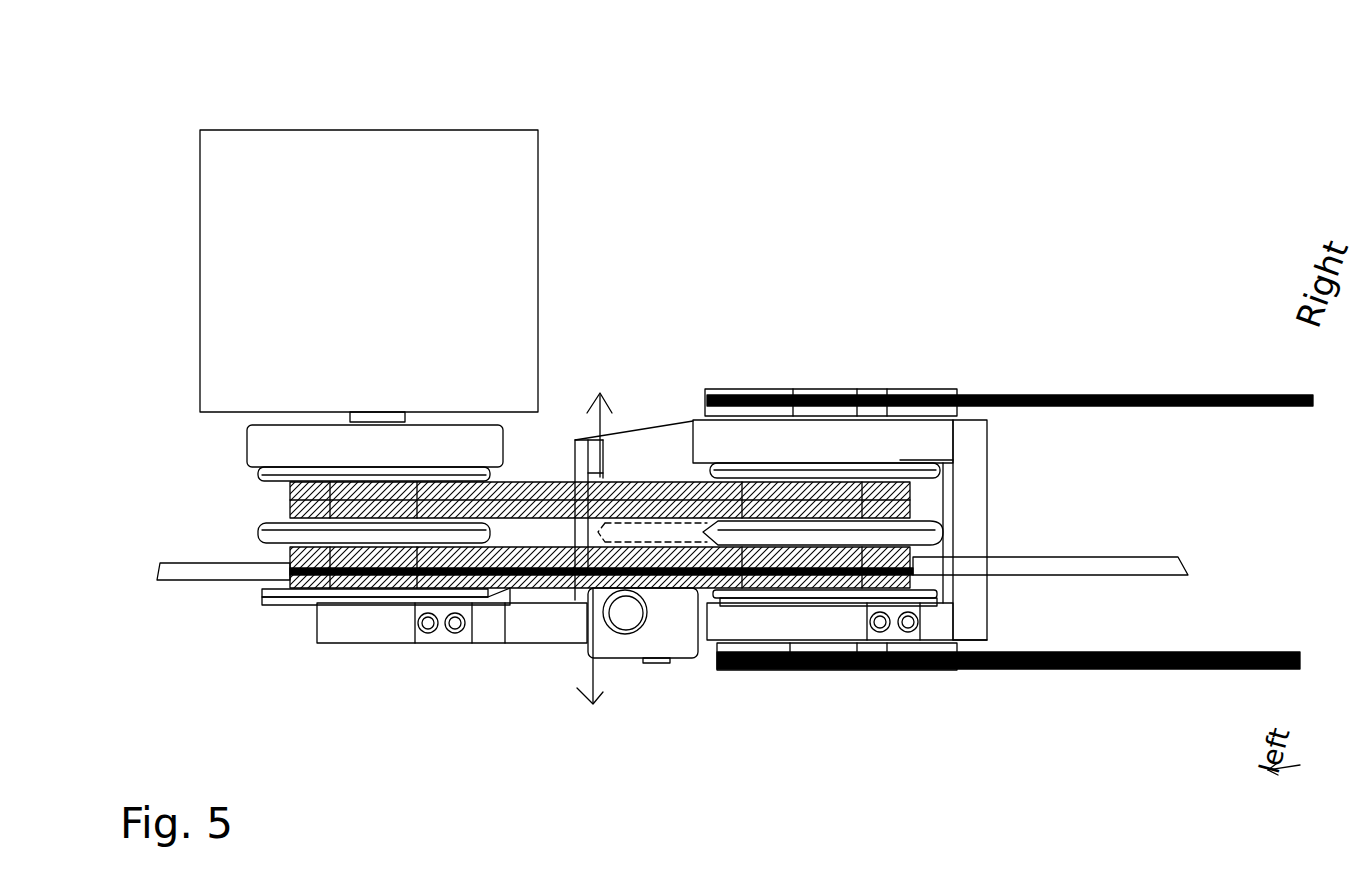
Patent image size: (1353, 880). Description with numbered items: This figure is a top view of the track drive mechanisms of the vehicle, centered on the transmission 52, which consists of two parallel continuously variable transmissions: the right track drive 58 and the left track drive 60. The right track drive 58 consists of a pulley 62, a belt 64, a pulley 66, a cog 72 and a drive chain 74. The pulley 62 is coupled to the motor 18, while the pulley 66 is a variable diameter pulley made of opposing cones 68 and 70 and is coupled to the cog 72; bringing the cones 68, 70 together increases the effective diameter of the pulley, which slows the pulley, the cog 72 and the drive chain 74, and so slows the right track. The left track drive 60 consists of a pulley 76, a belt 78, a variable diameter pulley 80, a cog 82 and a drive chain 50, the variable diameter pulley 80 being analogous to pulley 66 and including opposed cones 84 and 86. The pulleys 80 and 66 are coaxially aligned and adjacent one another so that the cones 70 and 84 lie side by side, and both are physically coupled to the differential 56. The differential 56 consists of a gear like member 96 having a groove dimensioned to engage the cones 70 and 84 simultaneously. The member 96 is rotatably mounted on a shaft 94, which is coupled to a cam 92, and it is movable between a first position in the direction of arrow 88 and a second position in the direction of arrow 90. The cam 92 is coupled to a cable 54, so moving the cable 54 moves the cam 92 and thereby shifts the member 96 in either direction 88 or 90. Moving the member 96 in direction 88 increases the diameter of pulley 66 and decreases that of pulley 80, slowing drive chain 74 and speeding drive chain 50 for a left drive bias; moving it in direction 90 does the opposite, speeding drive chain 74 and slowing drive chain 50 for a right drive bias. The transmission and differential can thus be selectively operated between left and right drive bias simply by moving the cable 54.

The motor 18 is at (202, 220).
The drive chain 50 is at (1097, 670).
The transmission 52 is at (703, 717).
The cable 54 is at (195, 568).
The differential 56 is at (662, 530).
The right track drive 58 is at (1010, 485).
The left track drive 60 is at (1008, 607).
The pulley 62 is at (266, 481).
The belt 64 is at (527, 492).
The pulley 66 is at (938, 497).
The cone 68 is at (755, 470).
The cone 70 is at (850, 525).
The cog 72 is at (935, 390).
The drive chain 74 is at (1215, 395).
The pulley 76 is at (280, 594).
The belt 78 is at (503, 580).
The variable diameter pulley 80 is at (955, 602).
The cog 82 is at (897, 672).
The cone 84 is at (930, 543).
The cone 86 is at (720, 593).
The arrow 88 is at (589, 409).
The arrow 90 is at (583, 674).
The cam 92 is at (633, 600).
The shaft 94 is at (660, 528).
The gear like member 96 is at (630, 540).